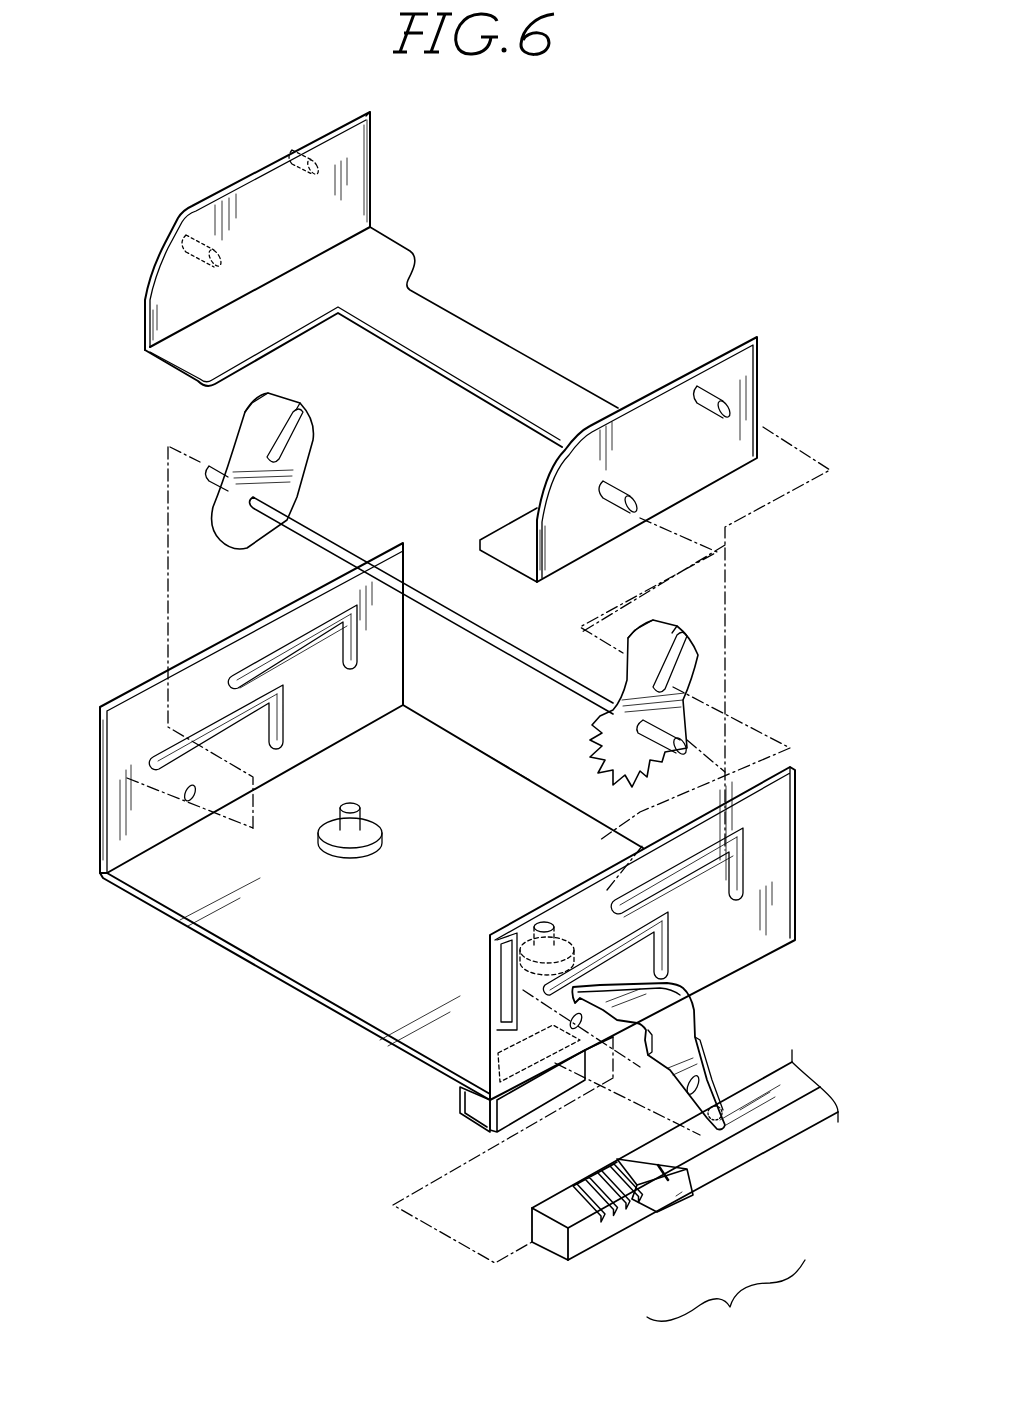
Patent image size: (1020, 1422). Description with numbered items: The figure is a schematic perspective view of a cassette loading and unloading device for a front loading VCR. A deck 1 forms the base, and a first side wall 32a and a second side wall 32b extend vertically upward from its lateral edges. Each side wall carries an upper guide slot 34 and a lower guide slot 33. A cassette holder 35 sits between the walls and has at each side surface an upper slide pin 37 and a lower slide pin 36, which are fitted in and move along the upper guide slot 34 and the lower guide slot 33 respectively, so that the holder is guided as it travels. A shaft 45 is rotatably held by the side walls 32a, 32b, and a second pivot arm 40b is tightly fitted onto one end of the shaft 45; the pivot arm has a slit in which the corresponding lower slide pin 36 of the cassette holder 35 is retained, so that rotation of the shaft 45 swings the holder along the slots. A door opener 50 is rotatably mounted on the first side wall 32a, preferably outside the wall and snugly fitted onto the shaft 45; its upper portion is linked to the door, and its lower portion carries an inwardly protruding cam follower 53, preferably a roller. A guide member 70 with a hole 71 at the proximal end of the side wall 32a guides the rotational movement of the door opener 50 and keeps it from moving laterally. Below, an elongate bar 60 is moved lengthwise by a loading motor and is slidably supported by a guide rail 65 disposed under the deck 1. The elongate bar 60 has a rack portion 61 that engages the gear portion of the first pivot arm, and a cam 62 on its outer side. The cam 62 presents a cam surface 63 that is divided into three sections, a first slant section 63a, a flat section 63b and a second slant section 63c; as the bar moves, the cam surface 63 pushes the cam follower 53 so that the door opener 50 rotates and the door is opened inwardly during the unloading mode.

The deck 1 is at (257, 935).
The first side wall 32a is at (545, 900).
The second side wall 32b is at (225, 663).
The lower guide slot 33 is at (560, 912).
The upper guide slot 34 is at (300, 643).
The cassette holder 35 is at (468, 338).
The lower slide pin 36 is at (185, 242).
The upper slide pin 37 is at (288, 148).
The second pivot arm 40b is at (258, 443).
The shaft 45 is at (470, 627).
The door opener 50 is at (680, 1045).
The cam follower 53 is at (730, 1127).
The elongate bar 60 is at (838, 1124).
The rack portion 61 is at (585, 1190).
The cam 62 is at (615, 1158).
The cam surface 63 is at (711, 1250).
The first slant section 63a is at (645, 1200).
The flat section 63b is at (672, 1196).
The second slant section 63c is at (673, 1195).
The guide rail 65 is at (457, 1113).
The guide member 70 is at (462, 1100).
The hole 71 is at (497, 997).